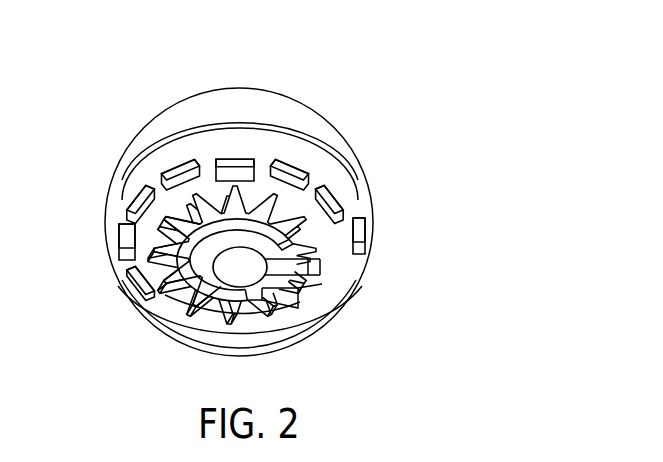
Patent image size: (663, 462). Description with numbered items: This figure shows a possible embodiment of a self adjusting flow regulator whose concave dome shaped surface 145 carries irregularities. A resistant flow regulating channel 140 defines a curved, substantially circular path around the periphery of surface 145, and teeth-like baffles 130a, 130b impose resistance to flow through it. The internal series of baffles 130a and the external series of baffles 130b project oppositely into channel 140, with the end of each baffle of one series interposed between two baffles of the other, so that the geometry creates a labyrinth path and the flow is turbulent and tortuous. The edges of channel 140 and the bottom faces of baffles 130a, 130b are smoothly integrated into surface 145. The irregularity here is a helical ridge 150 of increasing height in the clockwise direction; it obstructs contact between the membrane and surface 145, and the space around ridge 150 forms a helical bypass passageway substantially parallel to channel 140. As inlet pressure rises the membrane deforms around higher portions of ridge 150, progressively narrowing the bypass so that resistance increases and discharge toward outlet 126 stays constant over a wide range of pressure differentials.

The resistant flow regulating channel 140 is at (178, 190).
The internal series of baffles 130a is at (176, 262).
The external series of baffles 130b is at (300, 203).
The helical ridge 150 is at (283, 233).
The outlet 126 is at (240, 270).
The concave dome shaped surface 145 is at (268, 291).